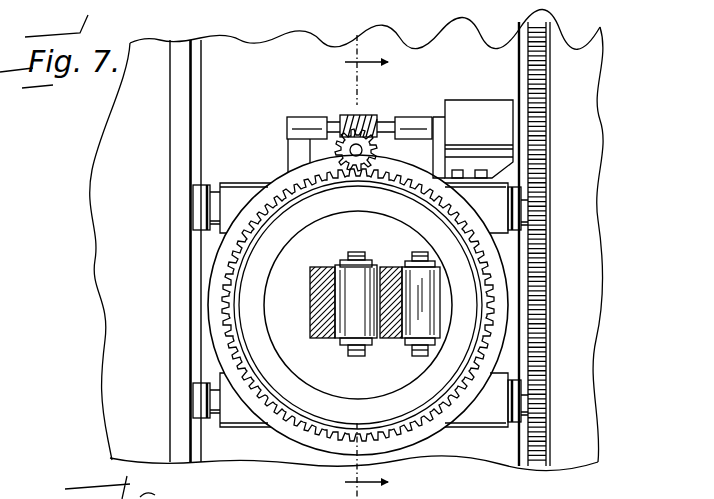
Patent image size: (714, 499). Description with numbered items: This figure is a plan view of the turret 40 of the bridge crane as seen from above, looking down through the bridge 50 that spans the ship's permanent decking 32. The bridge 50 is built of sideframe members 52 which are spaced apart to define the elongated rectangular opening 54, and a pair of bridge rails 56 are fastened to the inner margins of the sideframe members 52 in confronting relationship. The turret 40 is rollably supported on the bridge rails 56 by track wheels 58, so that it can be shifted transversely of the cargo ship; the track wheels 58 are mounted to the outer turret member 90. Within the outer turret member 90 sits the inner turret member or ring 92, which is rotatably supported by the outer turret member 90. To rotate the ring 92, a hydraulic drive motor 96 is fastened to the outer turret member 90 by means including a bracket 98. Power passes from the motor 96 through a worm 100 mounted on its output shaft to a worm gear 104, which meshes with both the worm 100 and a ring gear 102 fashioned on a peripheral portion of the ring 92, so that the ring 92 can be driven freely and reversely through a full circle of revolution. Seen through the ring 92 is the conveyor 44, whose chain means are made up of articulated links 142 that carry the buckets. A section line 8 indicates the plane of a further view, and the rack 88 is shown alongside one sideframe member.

The section line 8- 8 is at (353, 267).
The permanent decking 32 is at (112, 141).
The turret 40 is at (427, 443).
The conveyor 44 is at (375, 308).
The bridge 50 is at (166, 344).
The sideframe members 52 is at (533, 73).
The rectangular opening 54 is at (272, 89).
The bridge rails 56 is at (207, 452).
The track wheels 58 is at (193, 200).
The rack 88 is at (552, 335).
The outer turret member 90 is at (238, 427).
The inner turret member or ring 92 is at (283, 378).
The hydraulic drive motor 96 is at (473, 119).
The bracket 98 is at (500, 145).
The worm 100 is at (372, 116).
The ring gear 102 is at (318, 170).
The worm gear 104 is at (338, 107).
The links 142 is at (410, 362).